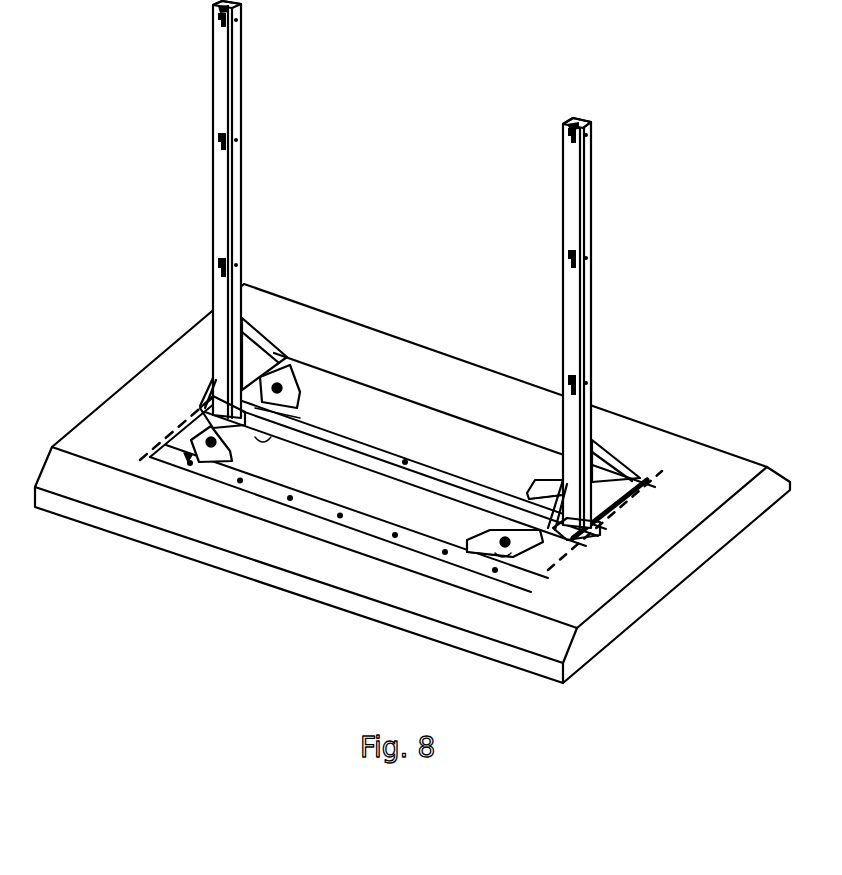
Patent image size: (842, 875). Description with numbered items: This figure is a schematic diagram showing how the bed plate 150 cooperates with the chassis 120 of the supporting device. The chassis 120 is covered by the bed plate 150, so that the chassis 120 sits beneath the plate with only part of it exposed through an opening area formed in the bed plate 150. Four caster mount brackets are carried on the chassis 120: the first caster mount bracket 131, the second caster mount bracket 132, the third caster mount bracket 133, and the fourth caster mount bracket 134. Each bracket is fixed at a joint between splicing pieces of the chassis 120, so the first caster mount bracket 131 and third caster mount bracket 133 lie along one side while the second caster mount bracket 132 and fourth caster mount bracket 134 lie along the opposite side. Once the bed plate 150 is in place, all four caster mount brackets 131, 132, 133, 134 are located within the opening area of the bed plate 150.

The chassis 120 is at (390, 425).
The first caster mount bracket 131 is at (225, 452).
The second caster mount bracket 132 is at (497, 541).
The third caster mount bracket 133 is at (286, 401).
The fourth caster mount bracket 134 is at (557, 492).
The bed plate 150 is at (648, 442).